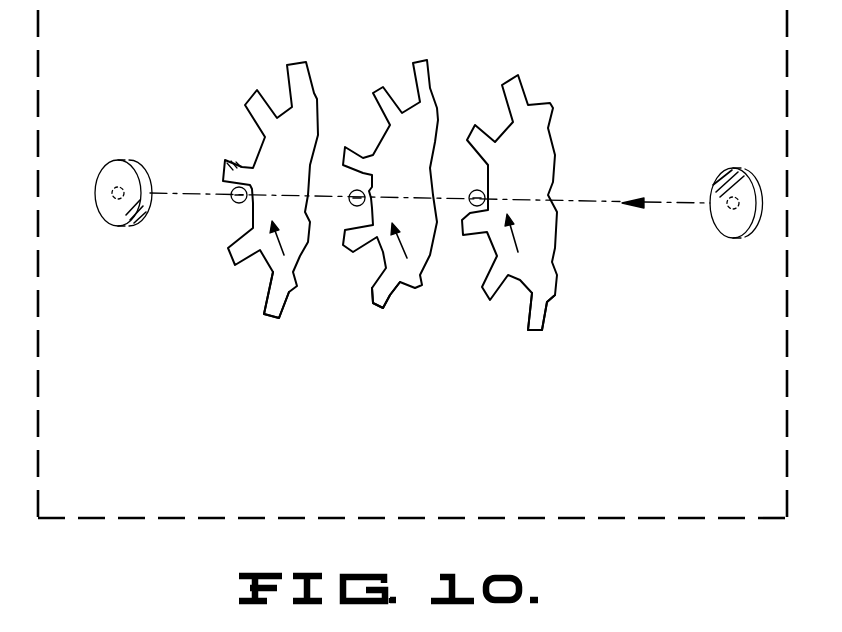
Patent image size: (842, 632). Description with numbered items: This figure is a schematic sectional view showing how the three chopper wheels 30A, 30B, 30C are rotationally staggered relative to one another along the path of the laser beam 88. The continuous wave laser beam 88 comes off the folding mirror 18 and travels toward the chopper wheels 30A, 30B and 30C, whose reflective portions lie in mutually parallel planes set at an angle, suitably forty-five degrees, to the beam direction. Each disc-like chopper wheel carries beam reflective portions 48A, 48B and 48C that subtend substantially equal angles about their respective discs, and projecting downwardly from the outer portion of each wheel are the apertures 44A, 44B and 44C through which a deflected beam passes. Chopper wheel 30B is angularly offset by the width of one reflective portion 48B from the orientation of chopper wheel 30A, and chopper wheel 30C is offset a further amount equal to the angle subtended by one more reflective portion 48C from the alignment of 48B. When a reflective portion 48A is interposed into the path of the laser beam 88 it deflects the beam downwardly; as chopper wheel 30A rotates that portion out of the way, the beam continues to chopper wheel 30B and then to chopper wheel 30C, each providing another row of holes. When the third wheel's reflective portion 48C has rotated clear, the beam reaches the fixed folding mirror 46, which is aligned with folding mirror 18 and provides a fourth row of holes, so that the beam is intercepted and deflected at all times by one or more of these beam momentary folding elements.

The folding mirror 18 is at (732, 236).
The fixed folding mirror 46 is at (105, 222).
The chopper wheel 30A is at (517, 278).
The chopper wheel 30B is at (385, 252).
The chopper wheel 30C is at (268, 260).
The aperture 44A is at (483, 188).
The aperture 44B is at (358, 197).
The aperture 44C is at (233, 206).
The reflective portion 48A is at (532, 333).
The reflective portion 48B is at (380, 303).
The reflective portion 48C is at (265, 312).
The laser beam 88 is at (648, 198).